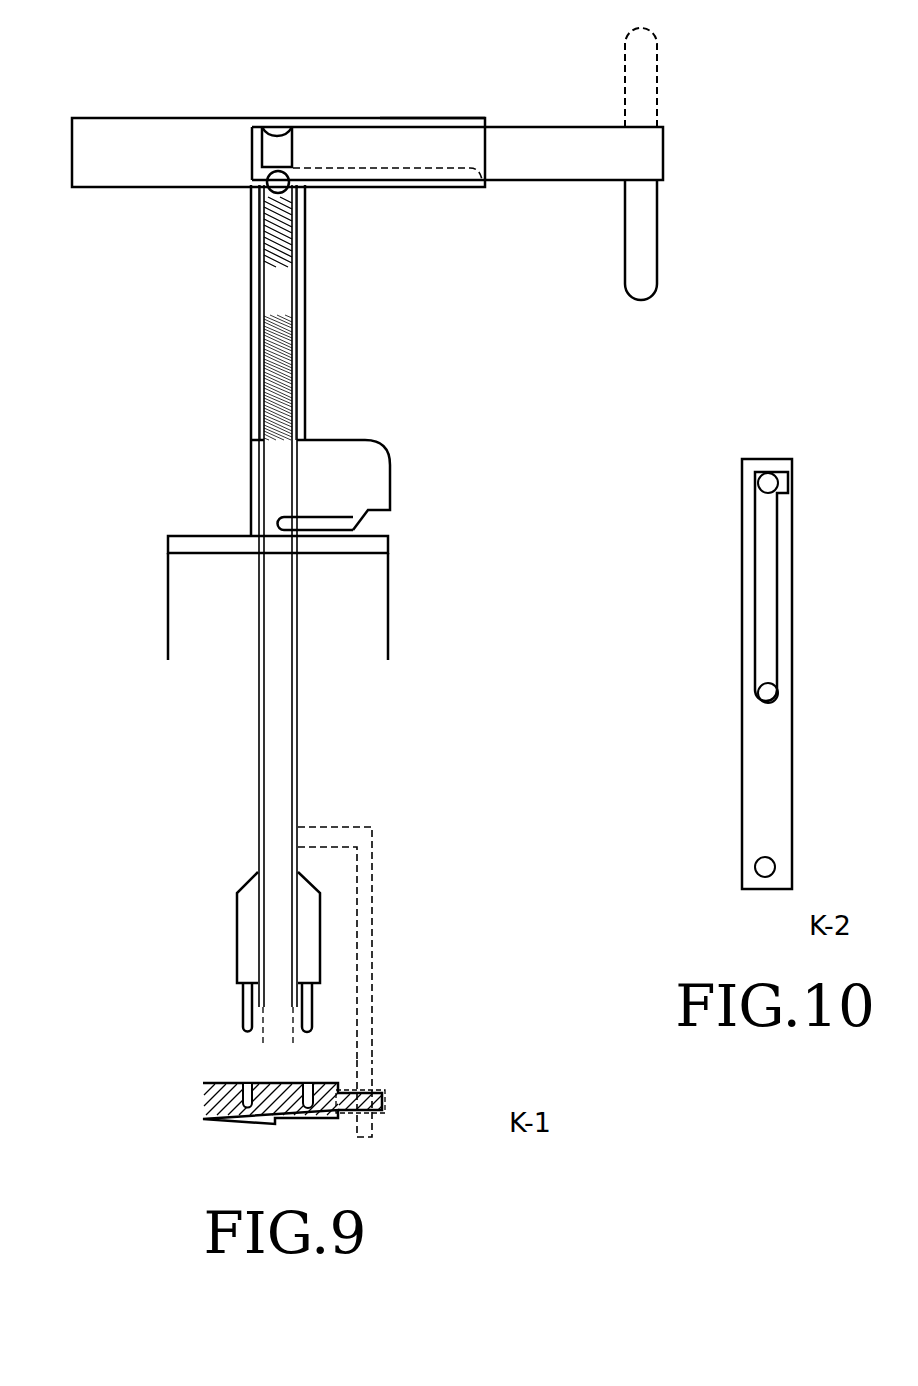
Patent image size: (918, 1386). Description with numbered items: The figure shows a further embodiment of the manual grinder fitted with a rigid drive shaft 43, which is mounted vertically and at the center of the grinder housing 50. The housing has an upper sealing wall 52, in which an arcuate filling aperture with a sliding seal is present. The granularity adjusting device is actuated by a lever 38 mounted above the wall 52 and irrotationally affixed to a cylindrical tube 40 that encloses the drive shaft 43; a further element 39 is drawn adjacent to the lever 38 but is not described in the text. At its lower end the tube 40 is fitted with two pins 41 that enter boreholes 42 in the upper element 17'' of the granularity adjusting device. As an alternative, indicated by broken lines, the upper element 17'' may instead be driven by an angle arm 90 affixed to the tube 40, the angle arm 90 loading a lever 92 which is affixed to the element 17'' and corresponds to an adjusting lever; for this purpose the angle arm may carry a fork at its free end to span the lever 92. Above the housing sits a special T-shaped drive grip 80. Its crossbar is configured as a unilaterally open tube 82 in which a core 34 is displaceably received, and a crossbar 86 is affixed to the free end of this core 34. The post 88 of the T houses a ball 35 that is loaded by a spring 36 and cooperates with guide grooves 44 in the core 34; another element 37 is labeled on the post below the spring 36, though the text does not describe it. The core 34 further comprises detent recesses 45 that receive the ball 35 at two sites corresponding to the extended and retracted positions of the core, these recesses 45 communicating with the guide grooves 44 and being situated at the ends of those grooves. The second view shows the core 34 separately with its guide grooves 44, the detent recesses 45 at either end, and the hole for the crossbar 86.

In FIG. 9, the unilaterally open tube 82 is at (120, 118).
In FIG. 9, the core 34 is at (650, 152).
In FIG. 10, the core 34 is at (757, 785).
In FIG. 9, the drive grip 80 is at (450, 120).
In FIG. 9, the detent recesses 45 is at (278, 127).
In FIG. 10, the detent recesses 45 is at (757, 500).
In FIG. 9, the guide grooves 44 is at (438, 168).
In FIG. 10, the guide grooves 44 is at (768, 548).
In FIG. 9, the crossbar 86 is at (657, 58).
In FIG. 10, the crossbar 86 is at (765, 867).
In FIG. 9, the ball 35 is at (253, 197).
In FIG. 9, the post 88 is at (250, 298).
In FIG. 9, the rod 37 is at (290, 282).
In FIG. 9, the spring 36 is at (295, 232).
In FIG. 9, the drive shaft 43 is at (273, 743).
In FIG. 9, the upper sealing wall 52 is at (212, 535).
In FIG. 9, the grinder housing 50 is at (390, 617).
In FIG. 9, the lever 38 is at (380, 472).
In FIG. 9, the pin 39 is at (350, 527).
In FIG. 9, the cylindrical tube 40 is at (308, 907).
In FIG. 9, the pins 41 is at (253, 1027).
In FIG. 9, the angle arm 90 is at (372, 907).
In FIG. 9, the upper element 17'' is at (413, 1123).
In FIG. 9, the boreholes 42 is at (290, 1103).
In FIG. 9, the lever 92 is at (385, 1093).